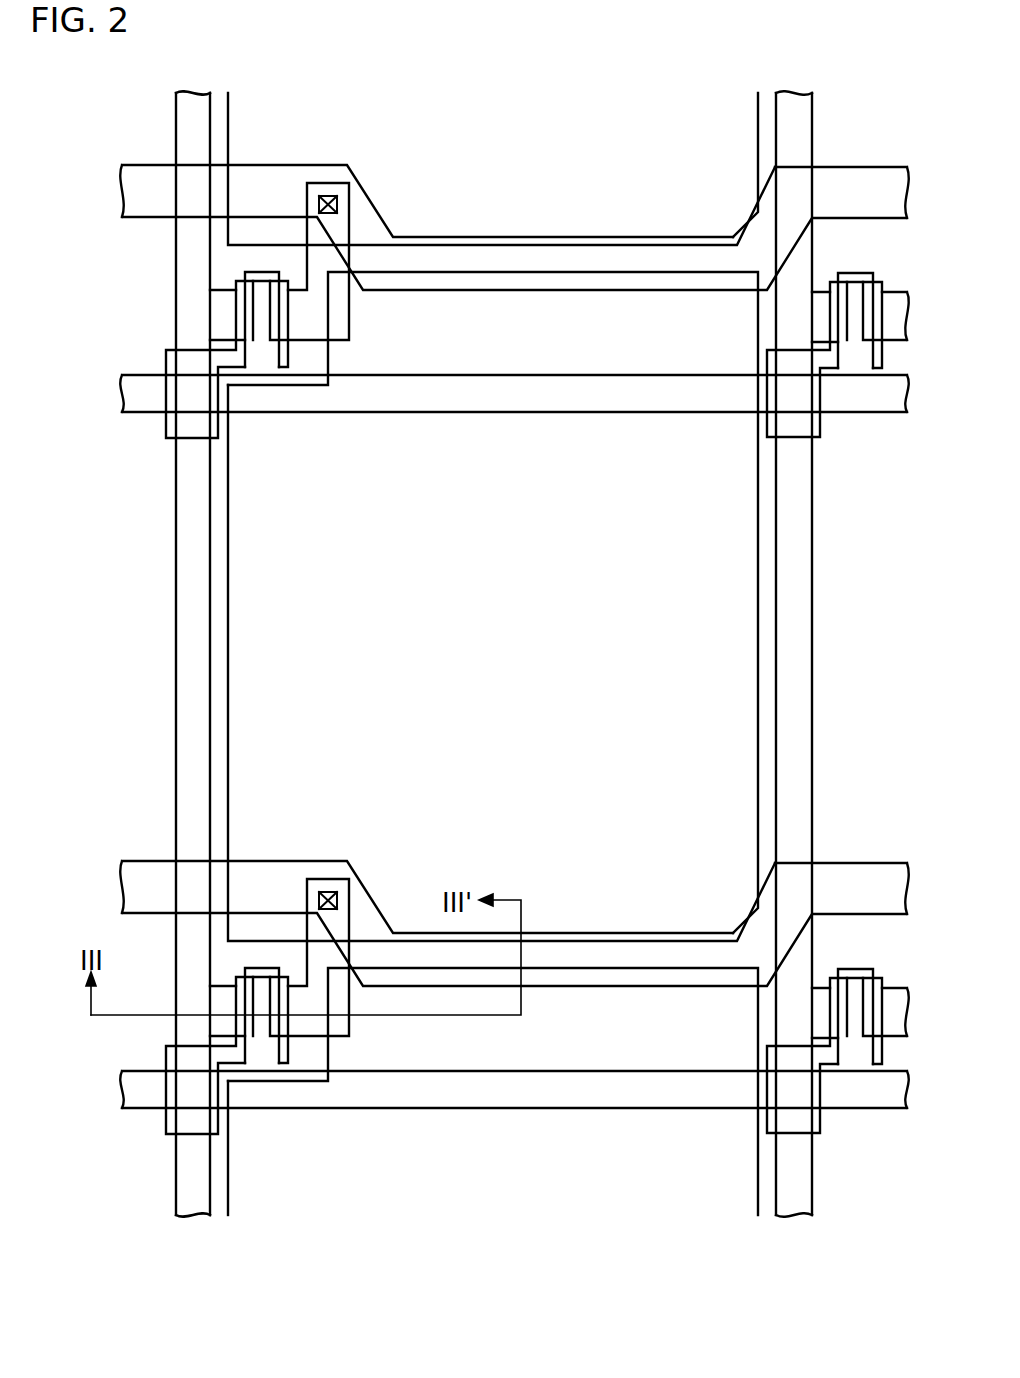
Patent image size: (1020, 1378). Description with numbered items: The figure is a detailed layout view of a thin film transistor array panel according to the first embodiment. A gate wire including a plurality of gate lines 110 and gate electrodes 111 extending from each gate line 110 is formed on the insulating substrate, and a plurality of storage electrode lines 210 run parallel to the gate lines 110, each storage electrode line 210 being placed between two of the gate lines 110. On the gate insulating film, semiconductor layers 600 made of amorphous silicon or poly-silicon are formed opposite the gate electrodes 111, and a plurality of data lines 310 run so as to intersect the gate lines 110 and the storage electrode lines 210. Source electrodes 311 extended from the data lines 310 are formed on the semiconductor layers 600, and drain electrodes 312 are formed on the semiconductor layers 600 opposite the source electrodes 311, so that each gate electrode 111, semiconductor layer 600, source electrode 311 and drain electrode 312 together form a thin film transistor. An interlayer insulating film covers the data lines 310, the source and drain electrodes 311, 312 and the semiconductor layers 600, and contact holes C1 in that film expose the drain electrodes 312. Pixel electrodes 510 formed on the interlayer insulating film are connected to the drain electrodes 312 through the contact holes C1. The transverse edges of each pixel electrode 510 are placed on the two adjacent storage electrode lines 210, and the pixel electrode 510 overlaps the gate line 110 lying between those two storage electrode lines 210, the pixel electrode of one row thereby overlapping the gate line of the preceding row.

The gate line 110 is at (650, 413).
The gate electrode 111 is at (250, 272).
The storage electrode line 210 is at (632, 237).
The data line 310 is at (176, 698).
The source electrode 311 is at (247, 342).
The drain electrode 312 is at (273, 343).
The pixel electrode 510 is at (471, 240).
The semiconductor layer 600 is at (288, 366).
The contact hole C1 is at (334, 196).